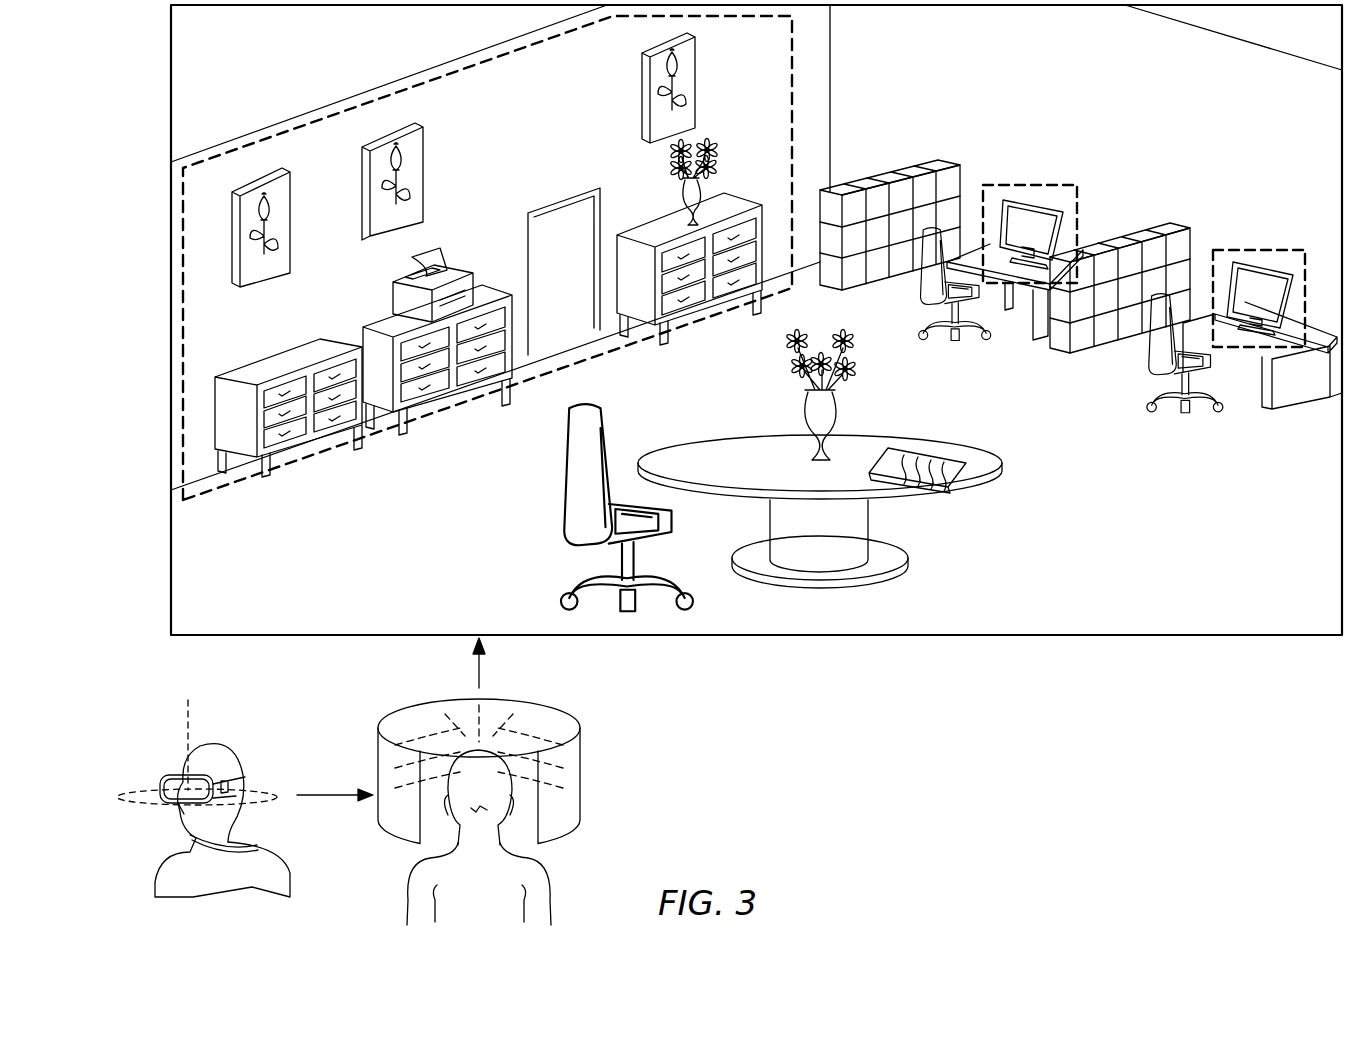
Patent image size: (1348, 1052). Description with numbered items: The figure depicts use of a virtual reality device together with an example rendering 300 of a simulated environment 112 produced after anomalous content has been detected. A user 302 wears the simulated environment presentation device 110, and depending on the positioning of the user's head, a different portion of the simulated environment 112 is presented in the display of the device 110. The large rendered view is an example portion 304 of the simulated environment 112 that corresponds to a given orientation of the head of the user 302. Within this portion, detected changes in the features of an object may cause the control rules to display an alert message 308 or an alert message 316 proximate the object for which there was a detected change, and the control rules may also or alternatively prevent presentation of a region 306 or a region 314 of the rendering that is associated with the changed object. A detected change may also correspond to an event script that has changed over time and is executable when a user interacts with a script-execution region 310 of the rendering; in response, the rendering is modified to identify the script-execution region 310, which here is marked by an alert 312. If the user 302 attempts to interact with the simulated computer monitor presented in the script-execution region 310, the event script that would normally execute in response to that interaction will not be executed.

The rendered frame / display 300 is at (134, 68).
The user 302 is at (354, 812).
The portion of the simulated environment 304 is at (935, 637).
The region 306 is at (1277, 242).
The alert message 308 is at (1310, 229).
The script-execution region 310 is at (1043, 175).
The alert 312 is at (1086, 164).
The region 314 is at (605, 352).
The alert message 316 is at (312, 511).
The simulated environment presentation device 110 is at (161, 781).
The simulated environment 112 is at (582, 782).